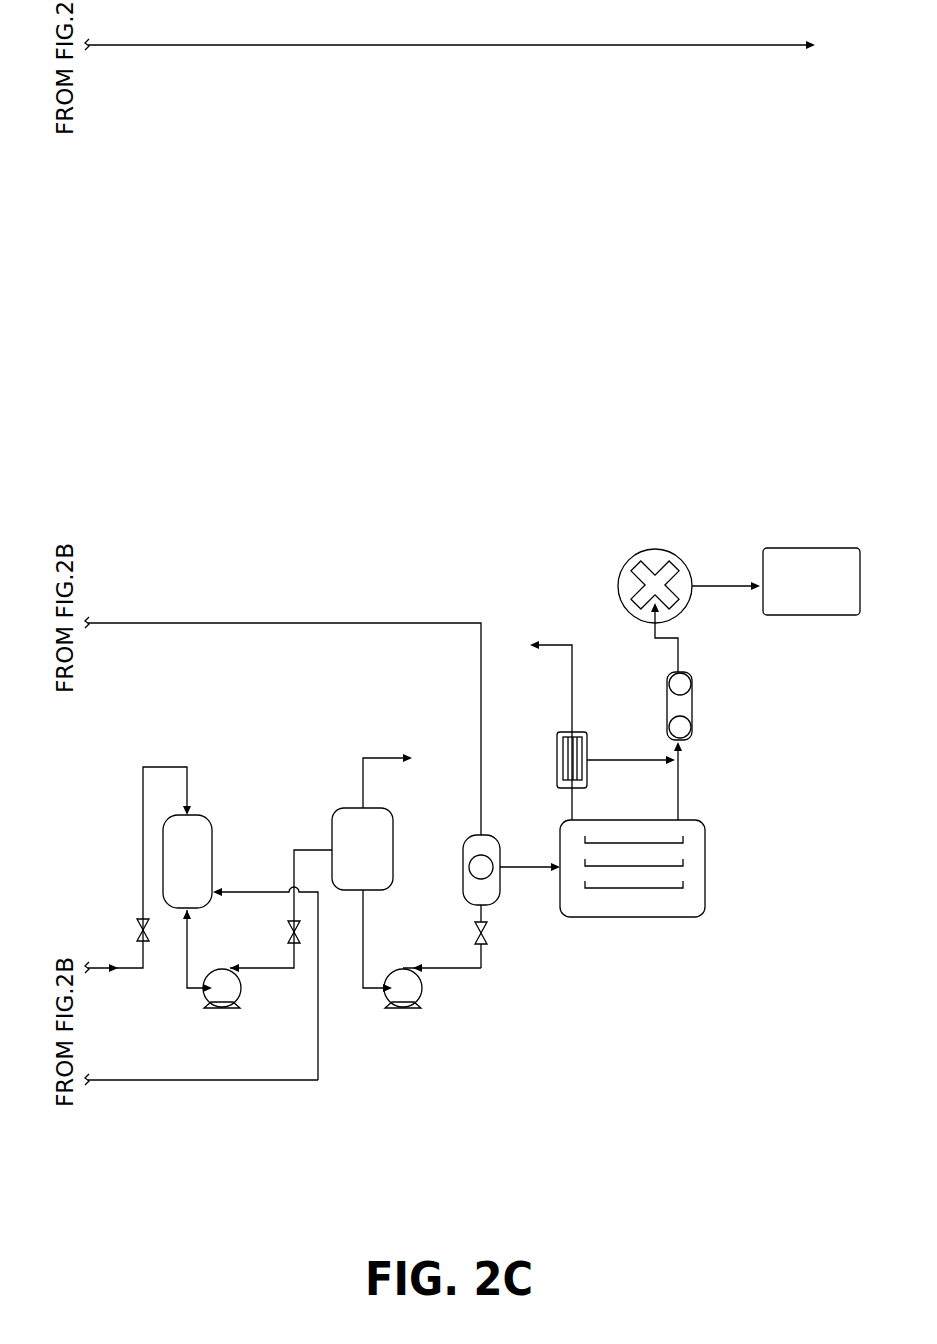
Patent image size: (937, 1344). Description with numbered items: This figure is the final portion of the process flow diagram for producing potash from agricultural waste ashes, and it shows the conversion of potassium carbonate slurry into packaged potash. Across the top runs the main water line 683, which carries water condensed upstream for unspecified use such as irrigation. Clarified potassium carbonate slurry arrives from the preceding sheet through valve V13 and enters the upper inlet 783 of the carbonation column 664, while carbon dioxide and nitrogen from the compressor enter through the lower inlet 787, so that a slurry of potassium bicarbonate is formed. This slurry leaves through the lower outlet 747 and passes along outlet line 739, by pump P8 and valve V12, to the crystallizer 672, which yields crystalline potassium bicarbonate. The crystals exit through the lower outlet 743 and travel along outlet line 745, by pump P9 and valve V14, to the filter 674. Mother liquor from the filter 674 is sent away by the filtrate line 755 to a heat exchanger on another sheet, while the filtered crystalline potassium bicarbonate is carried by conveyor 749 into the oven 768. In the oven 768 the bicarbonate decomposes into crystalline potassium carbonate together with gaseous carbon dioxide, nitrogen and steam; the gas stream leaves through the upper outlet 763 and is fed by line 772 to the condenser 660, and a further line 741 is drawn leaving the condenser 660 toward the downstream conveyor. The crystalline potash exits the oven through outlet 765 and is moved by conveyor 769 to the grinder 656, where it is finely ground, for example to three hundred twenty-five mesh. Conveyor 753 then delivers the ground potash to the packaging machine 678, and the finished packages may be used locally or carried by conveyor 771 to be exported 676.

The main water line 683 is at (473, 45).
The filtrate line 755 is at (340, 623).
The filter 674 is at (465, 840).
The conveyor 749 is at (521, 870).
The valve V14 is at (507, 936).
The outlet line 745 is at (364, 942).
The pump P9 is at (402, 1007).
The lower outlet 743 is at (364, 897).
The crystallizer 672 is at (350, 803).
The lower inlet 787 is at (212, 887).
The valve V12 is at (264, 936).
The outlet line 739 is at (186, 945).
The carbonation column 664 is at (212, 850).
The upper inlet 783 is at (205, 812).
The valve V13 is at (117, 935).
The lower outlet 747 is at (185, 916).
The pump P8 is at (222, 1006).
The line 772 is at (572, 806).
The condenser 660 is at (557, 755).
The conduit 741 is at (635, 755).
The conveyor 769 is at (680, 782).
The grinder 656 is at (695, 705).
The conveyor 753 is at (678, 657).
The packaging machine 678 is at (655, 548).
The conveyor 771 is at (722, 586).
The export 676 is at (813, 548).
The oven 768 is at (705, 880).
The upper outlet 763 is at (567, 820).
The outlet 765 is at (683, 820).